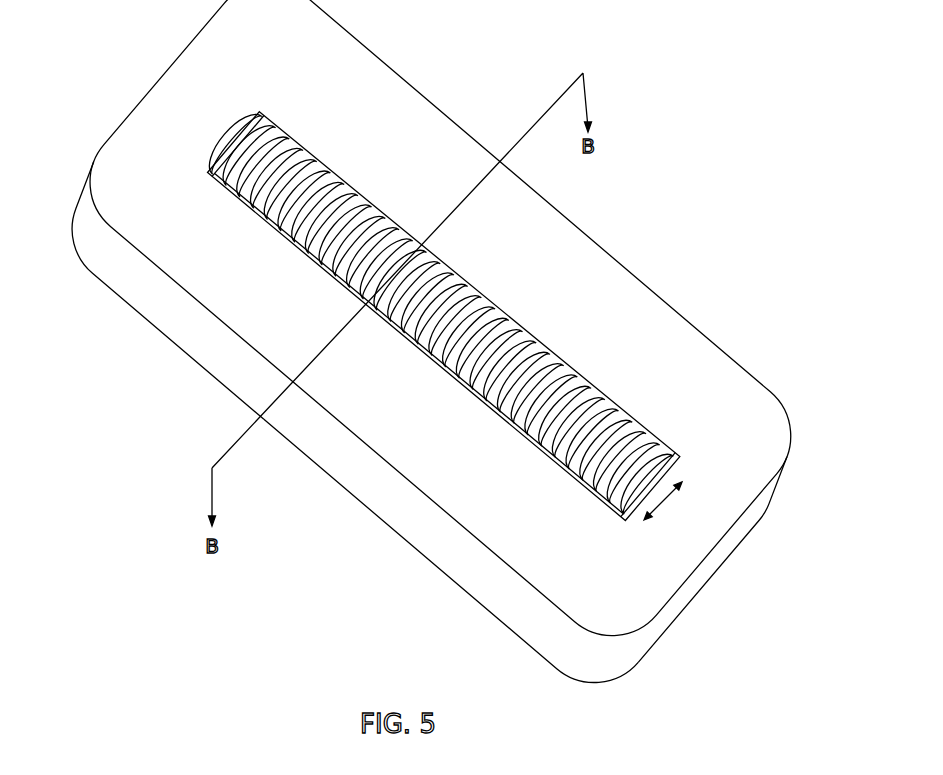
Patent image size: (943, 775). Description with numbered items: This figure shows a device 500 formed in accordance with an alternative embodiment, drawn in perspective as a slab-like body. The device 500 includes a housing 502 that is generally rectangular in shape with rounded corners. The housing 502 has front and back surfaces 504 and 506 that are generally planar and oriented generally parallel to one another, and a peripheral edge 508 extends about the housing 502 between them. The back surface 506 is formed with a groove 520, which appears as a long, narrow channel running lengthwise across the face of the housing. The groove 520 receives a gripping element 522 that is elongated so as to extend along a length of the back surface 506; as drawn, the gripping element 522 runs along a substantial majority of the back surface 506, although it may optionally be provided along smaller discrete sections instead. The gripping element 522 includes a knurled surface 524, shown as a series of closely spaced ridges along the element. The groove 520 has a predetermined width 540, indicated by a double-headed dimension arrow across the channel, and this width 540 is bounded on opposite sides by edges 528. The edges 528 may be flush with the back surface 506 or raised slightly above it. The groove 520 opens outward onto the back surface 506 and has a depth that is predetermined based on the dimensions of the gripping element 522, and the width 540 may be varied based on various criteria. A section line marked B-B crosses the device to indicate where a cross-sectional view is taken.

The device 500 is at (108, 407).
The housing 502 is at (727, 364).
The front surface 504 is at (438, 563).
The back surface 506 is at (778, 441).
The peripheral edge 508 is at (157, 318).
The groove 520 is at (518, 329).
The gripping element 522 is at (336, 262).
The knurled surface 524 is at (536, 417).
The edges 528 is at (283, 133).
The width 540 is at (664, 501).